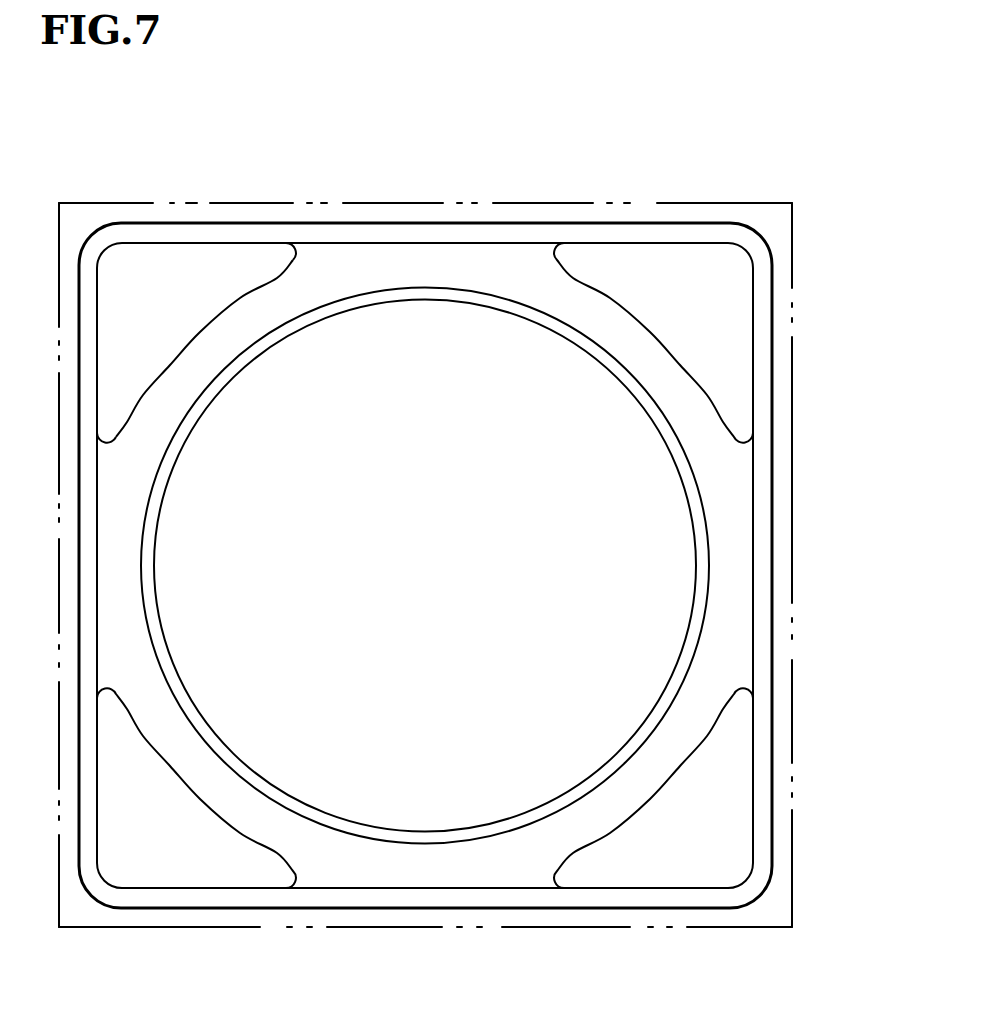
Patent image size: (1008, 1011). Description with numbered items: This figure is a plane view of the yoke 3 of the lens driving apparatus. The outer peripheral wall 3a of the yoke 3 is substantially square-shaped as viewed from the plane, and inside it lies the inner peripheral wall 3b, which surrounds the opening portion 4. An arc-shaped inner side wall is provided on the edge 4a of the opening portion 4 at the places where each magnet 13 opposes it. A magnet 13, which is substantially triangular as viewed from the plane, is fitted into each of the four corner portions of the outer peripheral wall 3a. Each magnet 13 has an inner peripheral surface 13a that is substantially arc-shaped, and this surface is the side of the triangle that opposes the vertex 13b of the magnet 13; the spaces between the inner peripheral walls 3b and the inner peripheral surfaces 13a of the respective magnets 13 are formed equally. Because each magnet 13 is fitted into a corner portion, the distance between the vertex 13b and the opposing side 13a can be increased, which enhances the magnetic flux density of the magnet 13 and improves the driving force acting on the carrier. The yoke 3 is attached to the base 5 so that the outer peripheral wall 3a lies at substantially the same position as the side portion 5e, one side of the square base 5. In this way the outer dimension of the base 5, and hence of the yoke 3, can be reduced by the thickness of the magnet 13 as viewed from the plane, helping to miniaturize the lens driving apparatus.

The yoke 3 is at (438, 486).
The outer peripheral wall 3a is at (484, 230).
The inner peripheral wall 3b is at (467, 297).
The opening portion 4 is at (507, 566).
The edge of the opening portion 4a is at (155, 553).
The base 5 is at (793, 261).
The side portion of the base 5e is at (793, 661).
The magnet 13 is at (399, 491).
The inner peripheral surface of the magnet 13a is at (247, 290).
The vertex of the magnet 13b is at (106, 251).